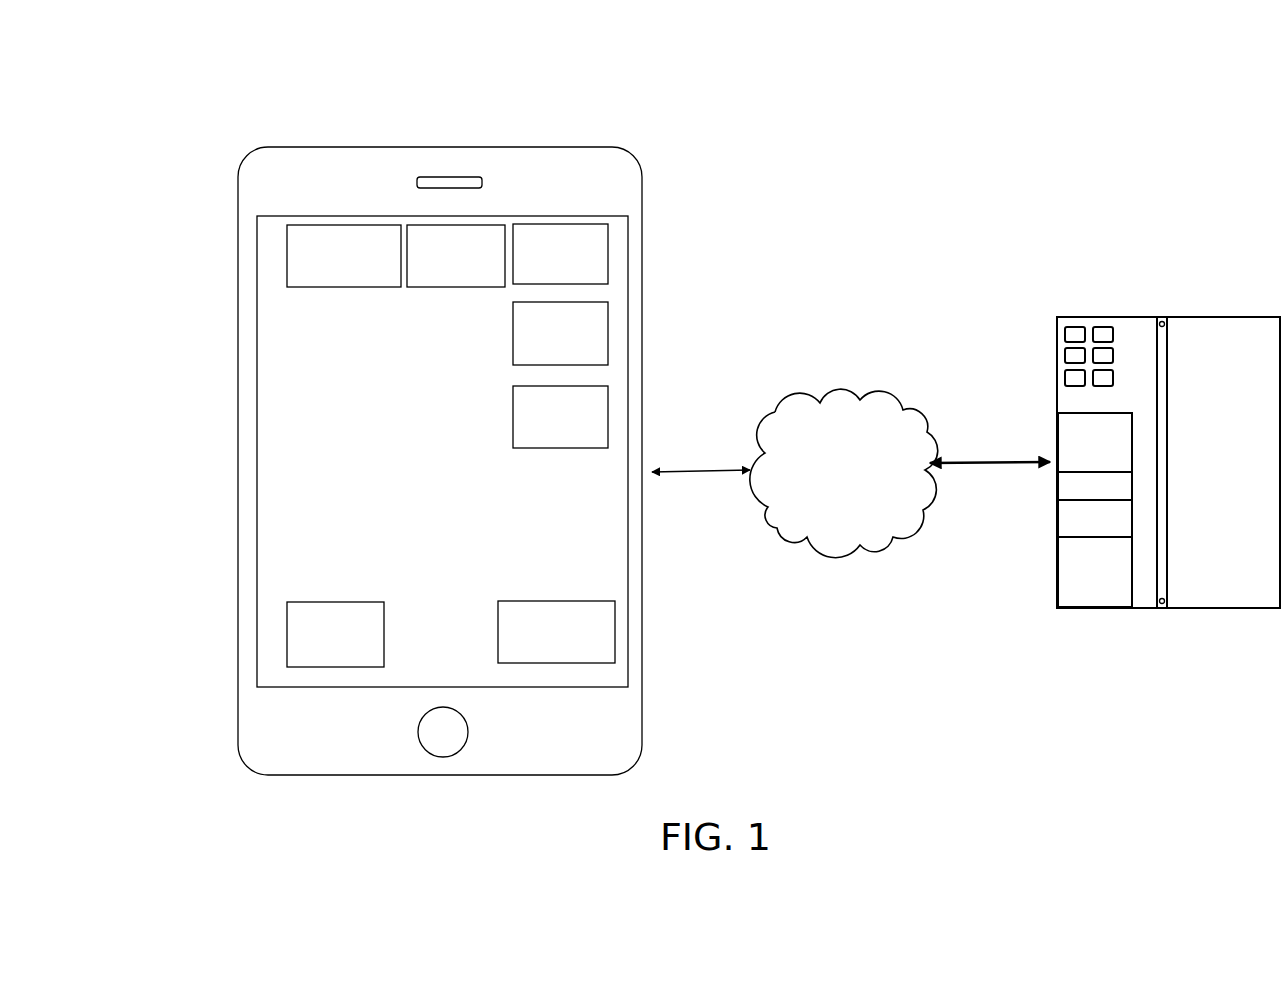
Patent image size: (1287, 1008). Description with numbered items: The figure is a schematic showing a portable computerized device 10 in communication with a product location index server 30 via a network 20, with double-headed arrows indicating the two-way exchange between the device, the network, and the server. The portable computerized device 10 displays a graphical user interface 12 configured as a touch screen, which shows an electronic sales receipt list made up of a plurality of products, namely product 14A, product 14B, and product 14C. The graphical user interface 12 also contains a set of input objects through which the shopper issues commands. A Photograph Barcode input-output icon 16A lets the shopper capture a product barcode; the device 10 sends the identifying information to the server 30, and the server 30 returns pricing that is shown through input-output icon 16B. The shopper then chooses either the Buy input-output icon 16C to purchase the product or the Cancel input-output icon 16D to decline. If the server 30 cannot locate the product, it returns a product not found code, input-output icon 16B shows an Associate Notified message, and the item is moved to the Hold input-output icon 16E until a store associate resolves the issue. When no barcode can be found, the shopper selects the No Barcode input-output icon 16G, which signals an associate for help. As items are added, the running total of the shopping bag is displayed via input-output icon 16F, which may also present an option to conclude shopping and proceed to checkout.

The portable computerized device 10 is at (412, 148).
The graphical user interface 12 is at (522, 520).
The product 14A is at (272, 322).
The product 14B is at (267, 370).
The product 14C is at (268, 425).
The Photograph Barcode input-output icon 16A is at (287, 255).
The price display input-output icon 16B is at (463, 222).
The Buy input-output icon 16C is at (610, 257).
The Cancel input-output icon 16D is at (608, 332).
The Hold input-output icon 16E is at (608, 412).
The total input-output icon 16F is at (287, 635).
The No Barcode input-output icon 16G is at (570, 660).
The network 20 is at (842, 413).
The product location index server 30 is at (1143, 338).